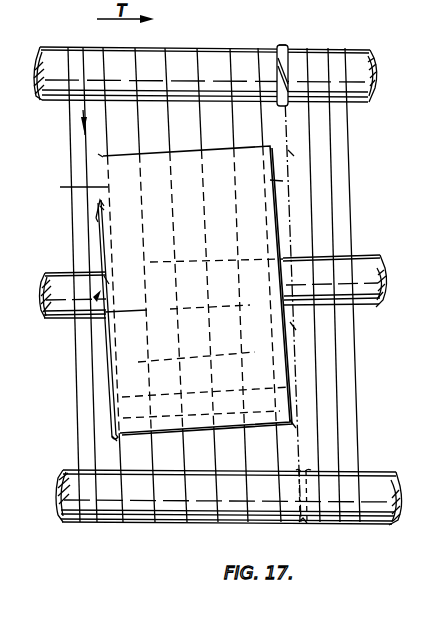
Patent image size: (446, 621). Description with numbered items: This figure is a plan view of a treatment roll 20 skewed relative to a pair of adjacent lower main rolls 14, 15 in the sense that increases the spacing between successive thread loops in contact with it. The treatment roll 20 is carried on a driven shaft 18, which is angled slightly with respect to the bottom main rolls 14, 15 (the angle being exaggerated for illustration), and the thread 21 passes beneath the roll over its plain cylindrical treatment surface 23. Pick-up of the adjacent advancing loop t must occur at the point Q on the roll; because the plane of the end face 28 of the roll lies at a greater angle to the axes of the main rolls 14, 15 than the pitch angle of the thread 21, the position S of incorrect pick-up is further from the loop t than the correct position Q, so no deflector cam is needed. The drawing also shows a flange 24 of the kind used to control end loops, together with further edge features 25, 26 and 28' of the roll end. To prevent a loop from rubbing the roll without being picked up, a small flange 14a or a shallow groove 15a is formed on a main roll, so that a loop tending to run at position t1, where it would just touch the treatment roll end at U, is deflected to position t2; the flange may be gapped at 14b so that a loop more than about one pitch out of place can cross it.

The lower main roll 14 is at (185, 57).
The small flange 14a is at (286, 46).
The gap 14b is at (280, 78).
The lower main roll 15 is at (383, 481).
The shallow groove 15a is at (306, 524).
The driven shaft 18 is at (70, 288).
The treatment roll 20 is at (97, 298).
The thread 21 is at (90, 176).
The cylindrical treatment surface 23 is at (226, 251).
The flange 24 is at (108, 282).
The strip tip 25 is at (100, 208).
The strip flange 26 is at (96, 220).
The end face 28 is at (84, 319).
The edge strip 28' is at (325, 186).
The position of incorrect pick-up S is at (117, 443).
The point of correct pick-up Q is at (100, 157).
The advancing loop t is at (80, 129).
The loop position t1 is at (293, 327).
The deflected loop position t2 is at (290, 153).
The touching point U is at (293, 424).